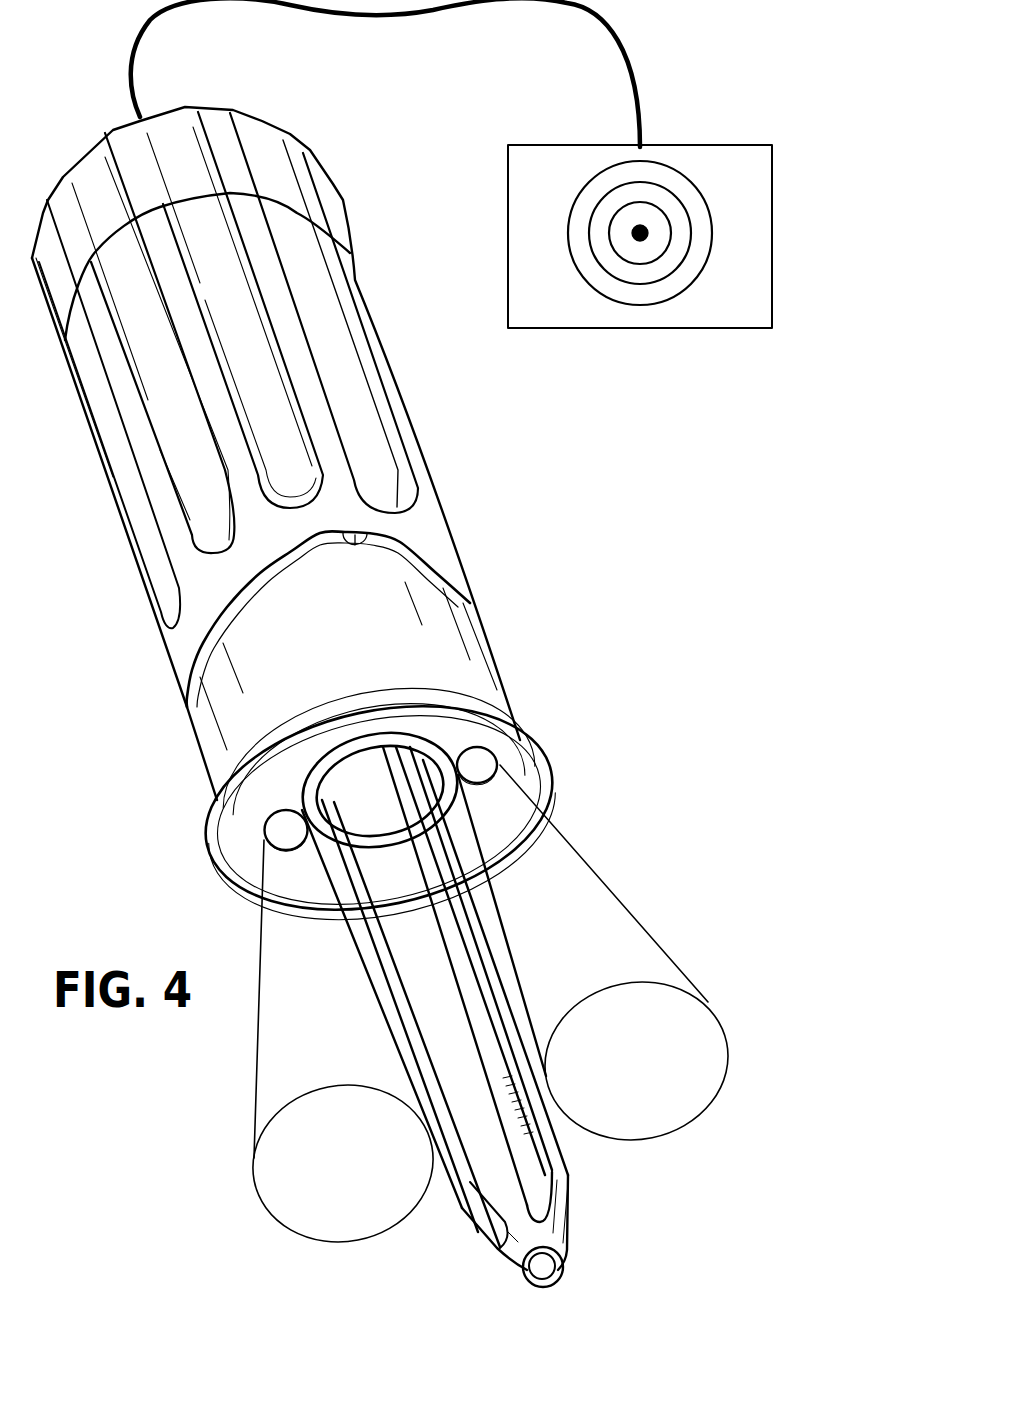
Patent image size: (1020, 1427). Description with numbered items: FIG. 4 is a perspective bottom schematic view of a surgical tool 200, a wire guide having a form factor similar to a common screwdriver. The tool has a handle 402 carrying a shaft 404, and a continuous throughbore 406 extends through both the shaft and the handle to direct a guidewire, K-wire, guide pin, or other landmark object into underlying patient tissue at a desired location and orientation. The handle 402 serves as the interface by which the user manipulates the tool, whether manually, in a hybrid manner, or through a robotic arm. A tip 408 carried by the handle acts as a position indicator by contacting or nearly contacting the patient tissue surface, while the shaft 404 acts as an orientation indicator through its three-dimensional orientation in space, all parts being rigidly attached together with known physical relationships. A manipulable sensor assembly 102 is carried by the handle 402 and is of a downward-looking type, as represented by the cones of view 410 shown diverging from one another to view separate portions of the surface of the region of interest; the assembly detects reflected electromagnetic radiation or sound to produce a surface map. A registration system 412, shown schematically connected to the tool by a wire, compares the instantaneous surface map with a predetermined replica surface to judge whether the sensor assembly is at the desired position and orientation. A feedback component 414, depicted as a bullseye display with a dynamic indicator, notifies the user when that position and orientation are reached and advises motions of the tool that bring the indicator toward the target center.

The surgical tool 200 is at (687, 583).
The manipulable sensor assembly 102 is at (530, 717).
The handle 402 is at (440, 451).
The shaft 404 is at (479, 1253).
The throughbore 406 is at (543, 1267).
The tip 408 is at (570, 1257).
The cones of view 410 is at (633, 917).
The registration system 412 is at (702, 145).
The feedback component 414 is at (713, 237).